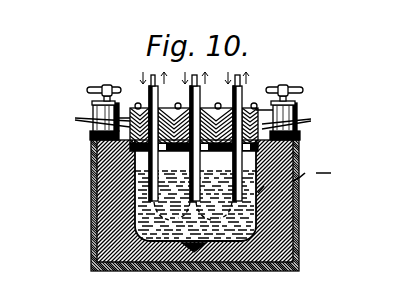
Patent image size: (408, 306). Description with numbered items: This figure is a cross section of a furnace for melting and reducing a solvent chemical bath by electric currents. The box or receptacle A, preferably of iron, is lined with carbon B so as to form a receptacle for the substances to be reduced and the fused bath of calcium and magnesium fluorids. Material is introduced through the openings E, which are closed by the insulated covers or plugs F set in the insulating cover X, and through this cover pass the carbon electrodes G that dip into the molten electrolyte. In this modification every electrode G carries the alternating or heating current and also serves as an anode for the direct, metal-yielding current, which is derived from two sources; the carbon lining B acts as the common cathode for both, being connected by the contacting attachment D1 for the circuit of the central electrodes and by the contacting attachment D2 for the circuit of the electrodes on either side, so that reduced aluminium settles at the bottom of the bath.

The box or receptacle A is at (290, 192).
The carbon lining B is at (100, 201).
The contacting attachment D1 is at (86, 97).
The contacting attachment D2 is at (292, 100).
The openings E is at (206, 162).
The insulated covers or plugs F is at (131, 100).
The electrodes G is at (139, 84).
The insulating cover X is at (191, 120).